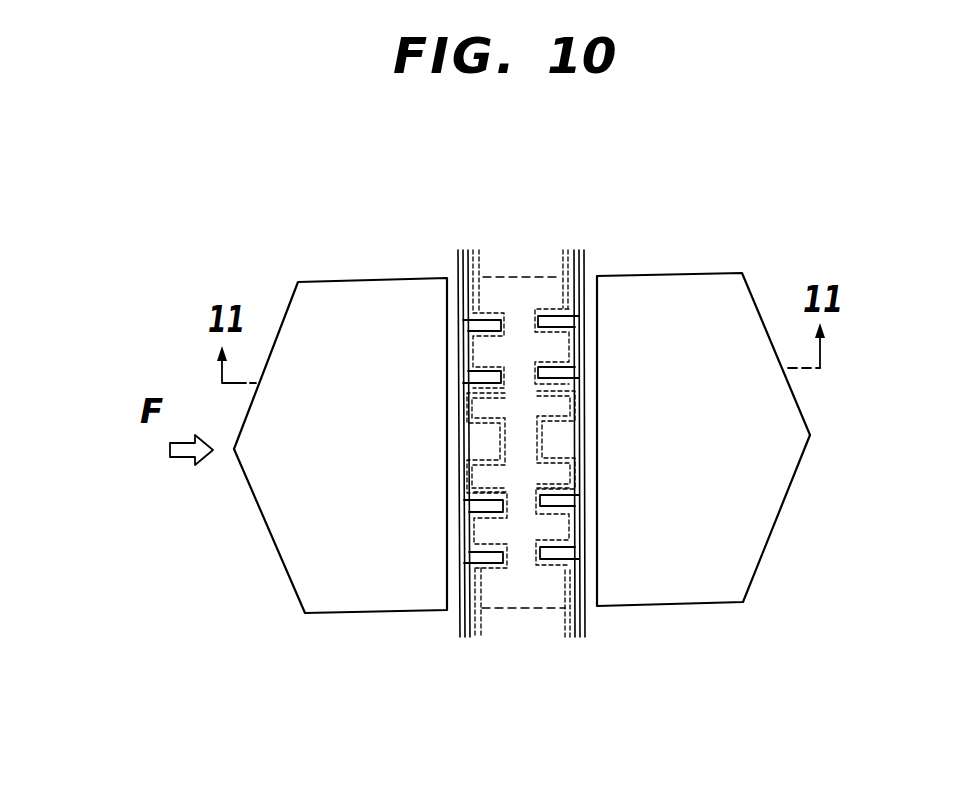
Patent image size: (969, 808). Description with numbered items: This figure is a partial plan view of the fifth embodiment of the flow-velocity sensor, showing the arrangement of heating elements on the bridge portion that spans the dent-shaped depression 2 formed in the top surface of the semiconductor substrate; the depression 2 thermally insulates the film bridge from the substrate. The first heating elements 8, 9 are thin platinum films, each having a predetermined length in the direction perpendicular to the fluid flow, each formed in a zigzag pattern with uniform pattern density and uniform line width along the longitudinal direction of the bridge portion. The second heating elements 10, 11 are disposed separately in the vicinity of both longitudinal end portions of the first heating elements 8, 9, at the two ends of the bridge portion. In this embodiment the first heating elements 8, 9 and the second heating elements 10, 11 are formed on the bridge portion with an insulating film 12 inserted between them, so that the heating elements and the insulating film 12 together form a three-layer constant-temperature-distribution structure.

The depression 2 is at (303, 315).
The first heating element 8 is at (467, 482).
The first heating element 9 is at (581, 478).
The second heating element 10 is at (463, 318).
The second heating element 11 is at (582, 317).
The insulating film 12 is at (460, 442).